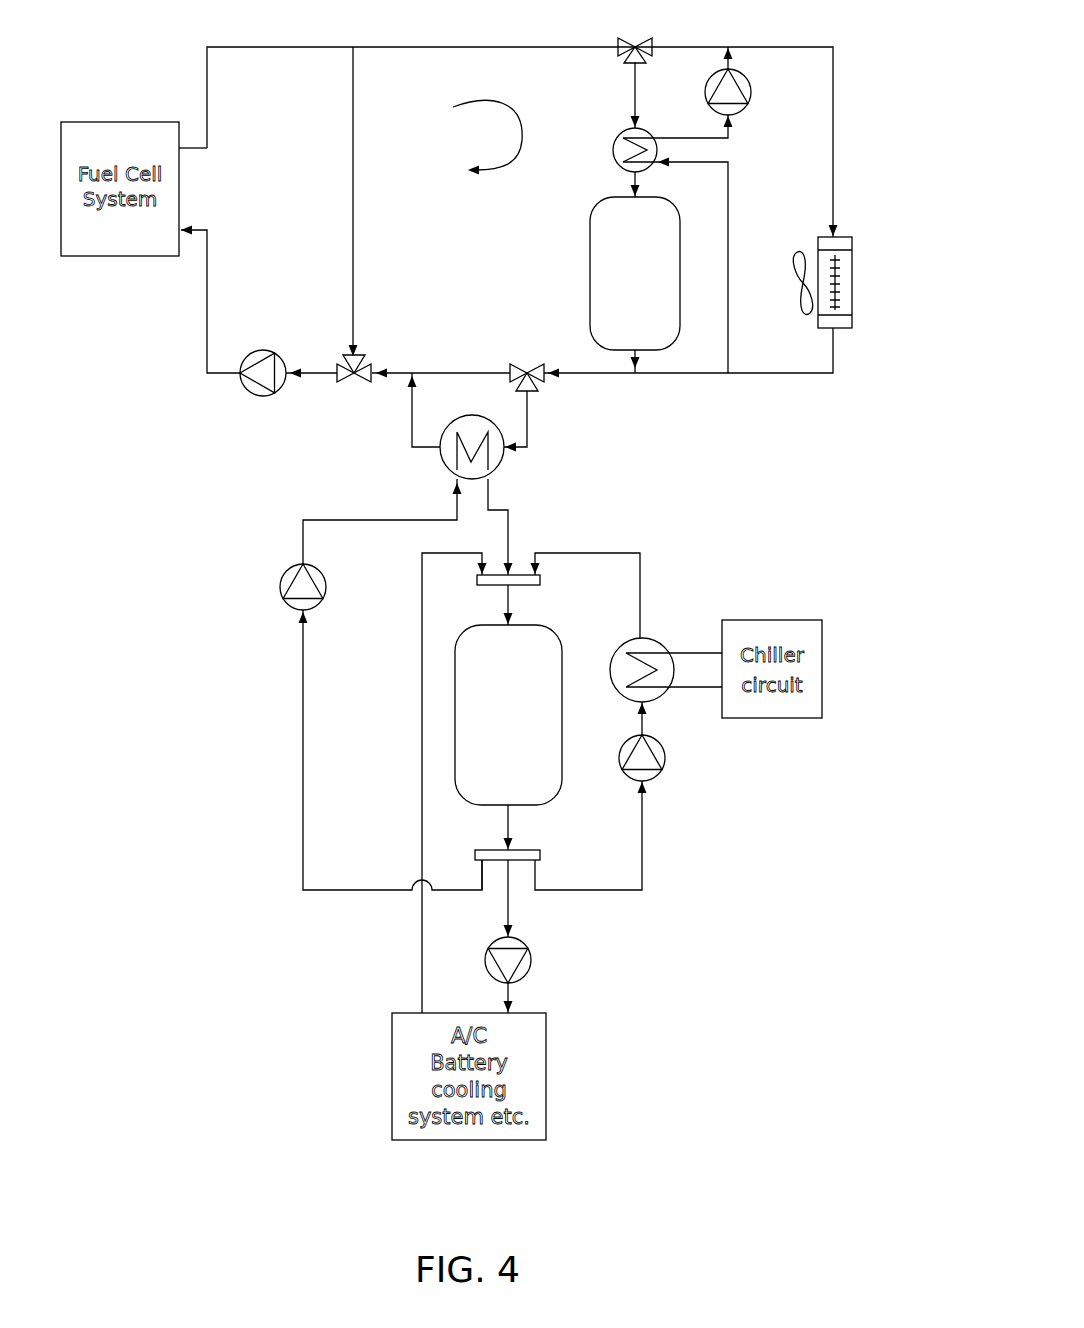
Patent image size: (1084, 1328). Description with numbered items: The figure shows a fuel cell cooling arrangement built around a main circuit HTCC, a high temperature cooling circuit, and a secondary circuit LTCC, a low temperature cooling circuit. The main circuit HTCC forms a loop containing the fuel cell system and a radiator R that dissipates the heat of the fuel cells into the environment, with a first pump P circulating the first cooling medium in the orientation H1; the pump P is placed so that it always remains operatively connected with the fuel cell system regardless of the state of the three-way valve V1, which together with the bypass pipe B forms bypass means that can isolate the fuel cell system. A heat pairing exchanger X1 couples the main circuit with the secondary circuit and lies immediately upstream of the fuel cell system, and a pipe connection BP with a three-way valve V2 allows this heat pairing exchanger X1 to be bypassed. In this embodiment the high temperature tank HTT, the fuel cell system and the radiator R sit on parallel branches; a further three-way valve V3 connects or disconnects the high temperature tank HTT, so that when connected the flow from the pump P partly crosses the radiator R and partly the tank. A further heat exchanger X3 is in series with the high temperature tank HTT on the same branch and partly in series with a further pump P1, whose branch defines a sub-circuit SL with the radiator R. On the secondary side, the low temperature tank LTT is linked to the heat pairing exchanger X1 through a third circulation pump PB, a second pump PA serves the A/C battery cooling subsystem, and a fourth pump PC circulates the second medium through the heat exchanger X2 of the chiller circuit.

The main circuit (high temperature cooling circuit) HTCC is at (222, 412).
The secondary circuit (low temperature cooling circuit) LTCC is at (242, 878).
The bypass means B is at (353, 205).
The pipe connection BP is at (470, 372).
The orientation of first cooling medium circulation H1 is at (487, 137).
The three-way valve V1 is at (362, 360).
The three-way valve V2 is at (534, 360).
The three-way valve V3 is at (630, 62).
The heat pairing exchanger X1 is at (584, 442).
The heat exchanger X2 is at (662, 640).
The further heat exchanger X3 is at (597, 163).
The first pump P is at (280, 388).
The further pump P1 is at (753, 92).
The second pump PA is at (528, 952).
The third circulation pump PB is at (272, 592).
The fourth pump PC is at (663, 775).
The radiator R is at (852, 275).
The sub-circuit SL is at (773, 348).
The high temperature tank HTT is at (635, 273).
The low temperature tank LTT is at (508, 715).